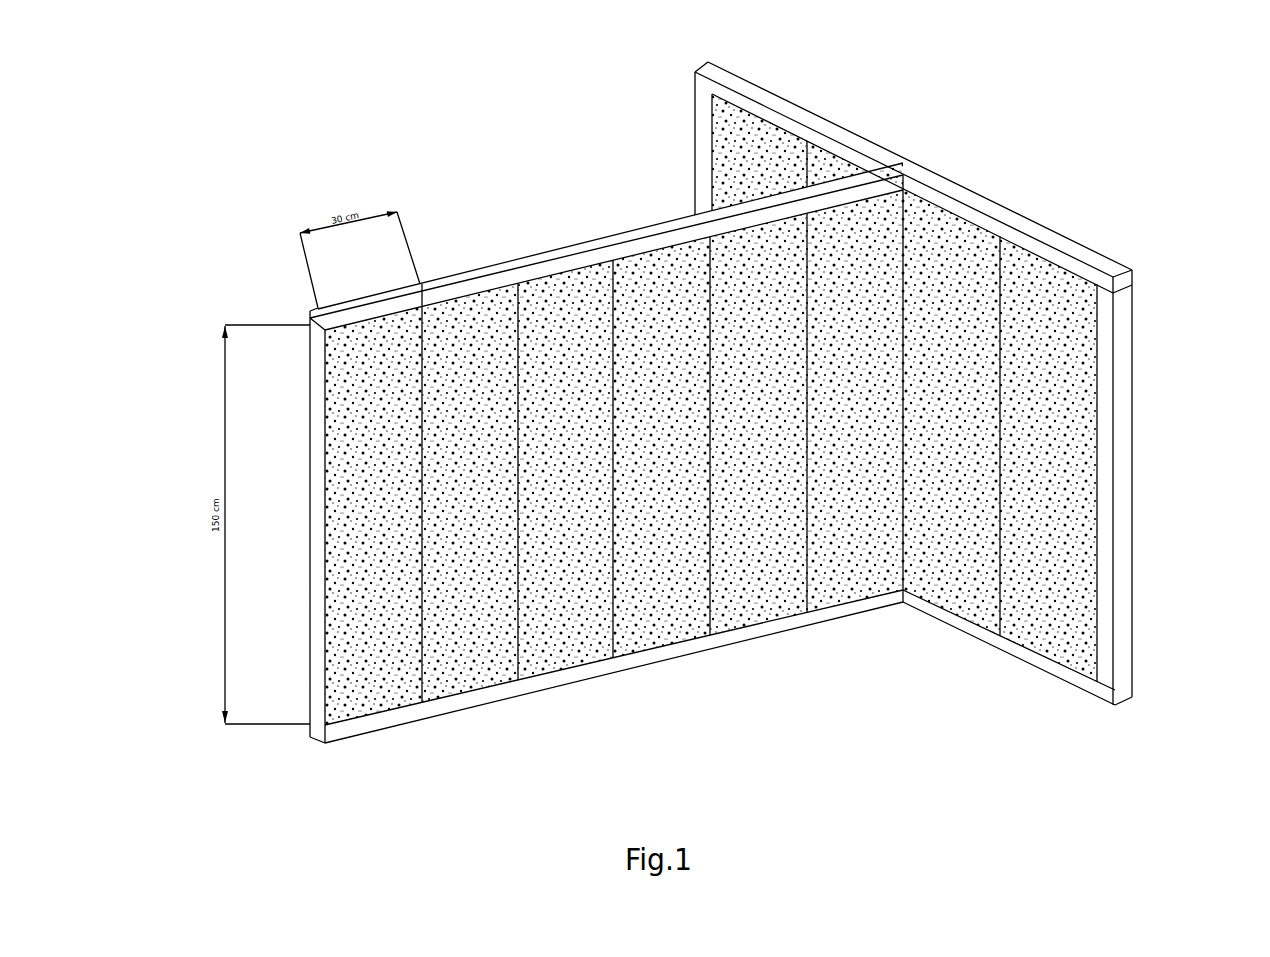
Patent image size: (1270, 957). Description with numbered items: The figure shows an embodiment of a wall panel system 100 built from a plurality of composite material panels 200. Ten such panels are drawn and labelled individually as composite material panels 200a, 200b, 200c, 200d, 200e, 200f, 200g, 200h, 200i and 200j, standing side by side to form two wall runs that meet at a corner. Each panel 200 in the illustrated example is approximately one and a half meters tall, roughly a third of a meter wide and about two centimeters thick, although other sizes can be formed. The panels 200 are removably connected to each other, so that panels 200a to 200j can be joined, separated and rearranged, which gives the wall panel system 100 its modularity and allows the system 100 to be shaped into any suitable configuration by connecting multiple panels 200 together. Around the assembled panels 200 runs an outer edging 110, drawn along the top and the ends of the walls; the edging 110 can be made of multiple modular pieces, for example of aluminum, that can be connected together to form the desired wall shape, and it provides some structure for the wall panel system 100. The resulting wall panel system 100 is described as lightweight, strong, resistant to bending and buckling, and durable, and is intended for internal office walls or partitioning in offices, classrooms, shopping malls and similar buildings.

The wall panel system 100 is at (740, 457).
The outer edging 110 is at (589, 251).
The composite material panels 200 is at (707, 457).
The composite material panel 200a is at (385, 688).
The composite material panel 200b is at (476, 670).
The composite material panel 200c is at (570, 650).
The composite material panel 200d is at (662, 632).
The composite material panel 200e is at (745, 600).
The composite material panel 200f is at (838, 582).
The composite material panel 200g is at (1025, 282).
The composite material panel 200h is at (928, 262).
The composite material panel 200i is at (828, 173).
The composite material panel 200j is at (750, 150).